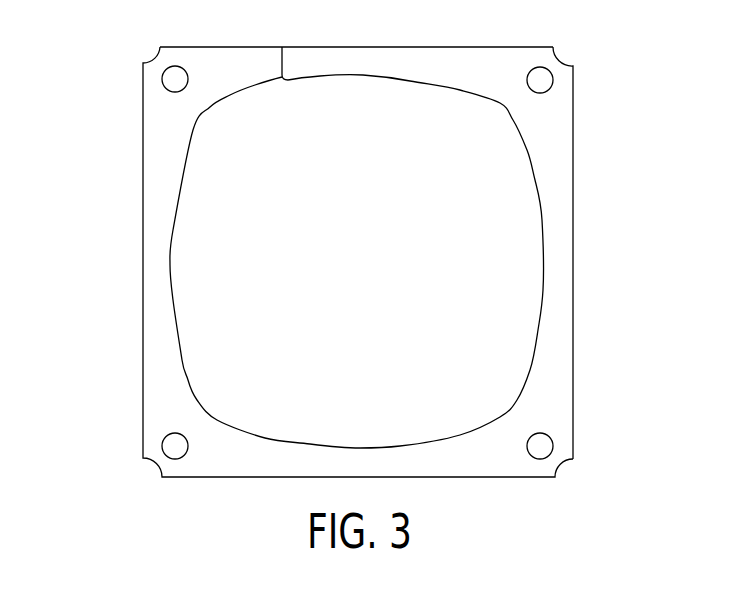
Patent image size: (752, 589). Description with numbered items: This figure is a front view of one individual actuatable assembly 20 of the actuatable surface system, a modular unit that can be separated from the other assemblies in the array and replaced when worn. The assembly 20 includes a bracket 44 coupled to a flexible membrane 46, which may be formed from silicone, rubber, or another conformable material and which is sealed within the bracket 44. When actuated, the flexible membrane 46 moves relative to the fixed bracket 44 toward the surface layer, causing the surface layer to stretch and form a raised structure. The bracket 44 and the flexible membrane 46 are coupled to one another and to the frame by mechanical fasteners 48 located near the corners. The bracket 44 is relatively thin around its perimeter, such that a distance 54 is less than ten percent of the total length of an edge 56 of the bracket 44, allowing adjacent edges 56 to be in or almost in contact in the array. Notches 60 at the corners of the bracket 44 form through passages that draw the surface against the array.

The individual actuatable assembly 20 is at (90, 129).
The bracket 44 is at (407, 47).
The flexible membrane 46 is at (270, 422).
The mechanical fasteners 48 is at (526, 453).
The distance 54 is at (279, 64).
The edge 56 is at (573, 262).
The notches 60 is at (577, 50).